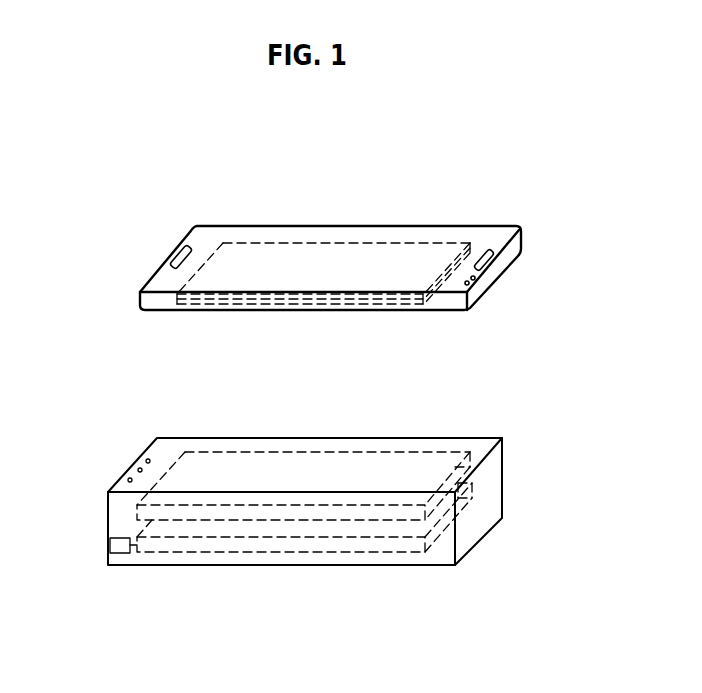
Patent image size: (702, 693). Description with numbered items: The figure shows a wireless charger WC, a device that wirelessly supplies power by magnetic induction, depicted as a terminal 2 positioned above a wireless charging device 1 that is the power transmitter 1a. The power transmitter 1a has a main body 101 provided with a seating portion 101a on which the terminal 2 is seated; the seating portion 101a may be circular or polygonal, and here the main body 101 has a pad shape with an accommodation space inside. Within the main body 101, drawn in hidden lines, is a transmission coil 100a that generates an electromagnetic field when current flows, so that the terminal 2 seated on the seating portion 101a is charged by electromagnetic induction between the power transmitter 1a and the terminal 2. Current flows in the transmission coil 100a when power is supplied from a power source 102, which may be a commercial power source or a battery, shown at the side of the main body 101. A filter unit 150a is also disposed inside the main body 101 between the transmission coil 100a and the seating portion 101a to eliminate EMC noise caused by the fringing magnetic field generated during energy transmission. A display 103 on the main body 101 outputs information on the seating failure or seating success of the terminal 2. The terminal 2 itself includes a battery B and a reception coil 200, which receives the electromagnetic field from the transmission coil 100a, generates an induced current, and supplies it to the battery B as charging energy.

The wireless charger WC is at (343, 146).
The terminal 2 is at (308, 269).
The reception coil 200 is at (380, 303).
The battery B is at (180, 293).
The wireless charging device 1 is at (309, 500).
The power transmitter 1a is at (309, 500).
The main body 101 is at (303, 454).
The seating portion 101a is at (247, 438).
The filter unit 150a is at (415, 512).
The transmission coil 100a is at (363, 545).
The power source 102 is at (110, 544).
The display 103 is at (130, 480).